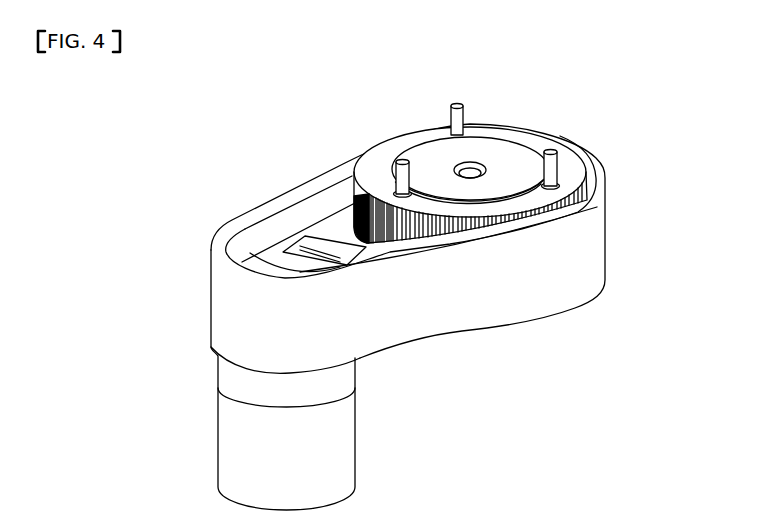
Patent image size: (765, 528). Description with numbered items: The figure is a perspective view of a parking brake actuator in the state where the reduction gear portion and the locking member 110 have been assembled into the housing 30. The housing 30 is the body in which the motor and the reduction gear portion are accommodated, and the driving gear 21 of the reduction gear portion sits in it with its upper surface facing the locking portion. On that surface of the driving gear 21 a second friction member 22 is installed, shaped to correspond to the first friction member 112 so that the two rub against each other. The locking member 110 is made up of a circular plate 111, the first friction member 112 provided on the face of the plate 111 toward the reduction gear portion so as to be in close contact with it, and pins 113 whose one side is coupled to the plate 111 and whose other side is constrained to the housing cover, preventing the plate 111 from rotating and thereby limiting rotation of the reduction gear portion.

The housing 30 is at (242, 306).
The driving gear 21 is at (553, 200).
The second friction member 22 is at (583, 188).
The locking member 110 is at (548, 154).
The plate 111 is at (522, 146).
The first friction member 112 is at (562, 183).
The pin 113 is at (463, 108).